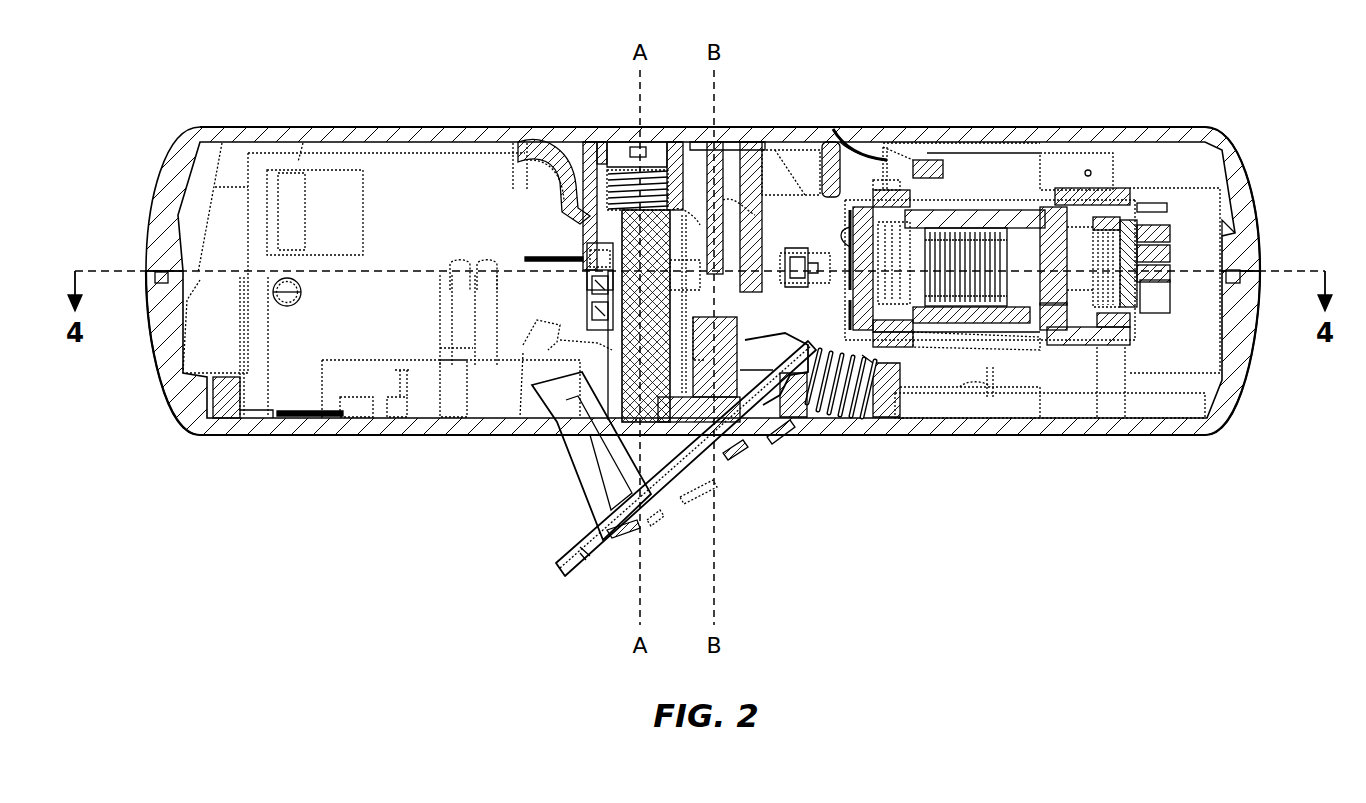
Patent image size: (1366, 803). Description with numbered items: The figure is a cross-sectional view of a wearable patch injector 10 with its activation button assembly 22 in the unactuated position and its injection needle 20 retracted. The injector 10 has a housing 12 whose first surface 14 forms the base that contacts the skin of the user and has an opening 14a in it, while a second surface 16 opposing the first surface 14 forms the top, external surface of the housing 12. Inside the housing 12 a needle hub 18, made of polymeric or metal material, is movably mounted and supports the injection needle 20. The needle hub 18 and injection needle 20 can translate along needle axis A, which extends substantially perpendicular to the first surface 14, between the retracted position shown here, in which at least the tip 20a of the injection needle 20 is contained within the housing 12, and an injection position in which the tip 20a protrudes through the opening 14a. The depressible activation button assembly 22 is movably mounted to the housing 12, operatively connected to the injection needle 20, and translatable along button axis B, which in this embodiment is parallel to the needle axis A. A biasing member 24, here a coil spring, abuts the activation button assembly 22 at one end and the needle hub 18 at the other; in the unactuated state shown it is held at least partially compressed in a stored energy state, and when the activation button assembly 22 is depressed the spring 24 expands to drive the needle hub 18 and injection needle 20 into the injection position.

The injector 10 is at (310, 74).
The housing 12 is at (1118, 116).
The first surface 14 is at (1050, 440).
The opening 14a is at (733, 462).
The second surface 16 is at (980, 128).
The needle hub 18 is at (602, 250).
The injection needle 20 is at (607, 349).
The tip 20a is at (570, 452).
The activation button assembly 22 is at (745, 145).
The biasing member 24 is at (633, 170).